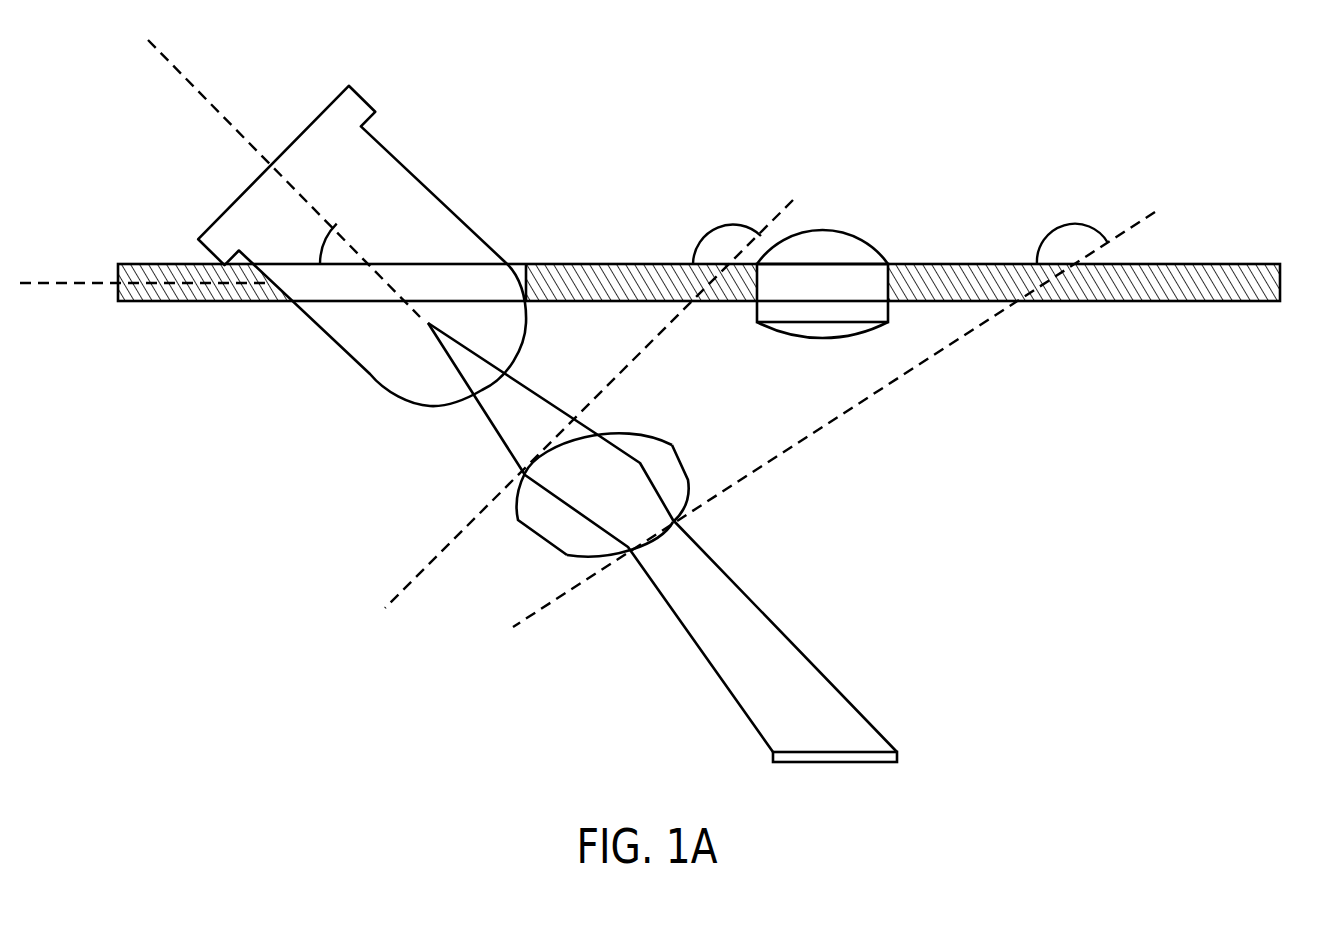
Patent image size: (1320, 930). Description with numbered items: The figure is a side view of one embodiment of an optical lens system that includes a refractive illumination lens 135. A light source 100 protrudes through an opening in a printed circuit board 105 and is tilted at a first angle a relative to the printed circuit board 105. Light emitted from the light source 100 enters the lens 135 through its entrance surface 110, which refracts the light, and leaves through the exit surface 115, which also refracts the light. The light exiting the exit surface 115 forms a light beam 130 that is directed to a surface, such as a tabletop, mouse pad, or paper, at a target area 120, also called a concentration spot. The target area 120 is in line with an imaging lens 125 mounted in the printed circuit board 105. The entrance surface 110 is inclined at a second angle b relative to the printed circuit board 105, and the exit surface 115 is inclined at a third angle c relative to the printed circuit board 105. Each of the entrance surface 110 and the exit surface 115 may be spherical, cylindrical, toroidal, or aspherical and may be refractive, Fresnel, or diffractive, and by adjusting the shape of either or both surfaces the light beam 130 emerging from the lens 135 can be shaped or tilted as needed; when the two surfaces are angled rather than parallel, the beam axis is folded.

The light source 100 is at (337, 223).
The printed circuit board 105 is at (660, 300).
The entrance surface 110 is at (518, 499).
The exit surface 115 is at (687, 497).
The target area 120 is at (860, 770).
The imaging lens 125 is at (822, 284).
The light beam 130 is at (720, 678).
The lens 135 is at (599, 494).
The first angle a is at (315, 244).
The second angle b is at (589, 404).
The third angle c is at (834, 418).